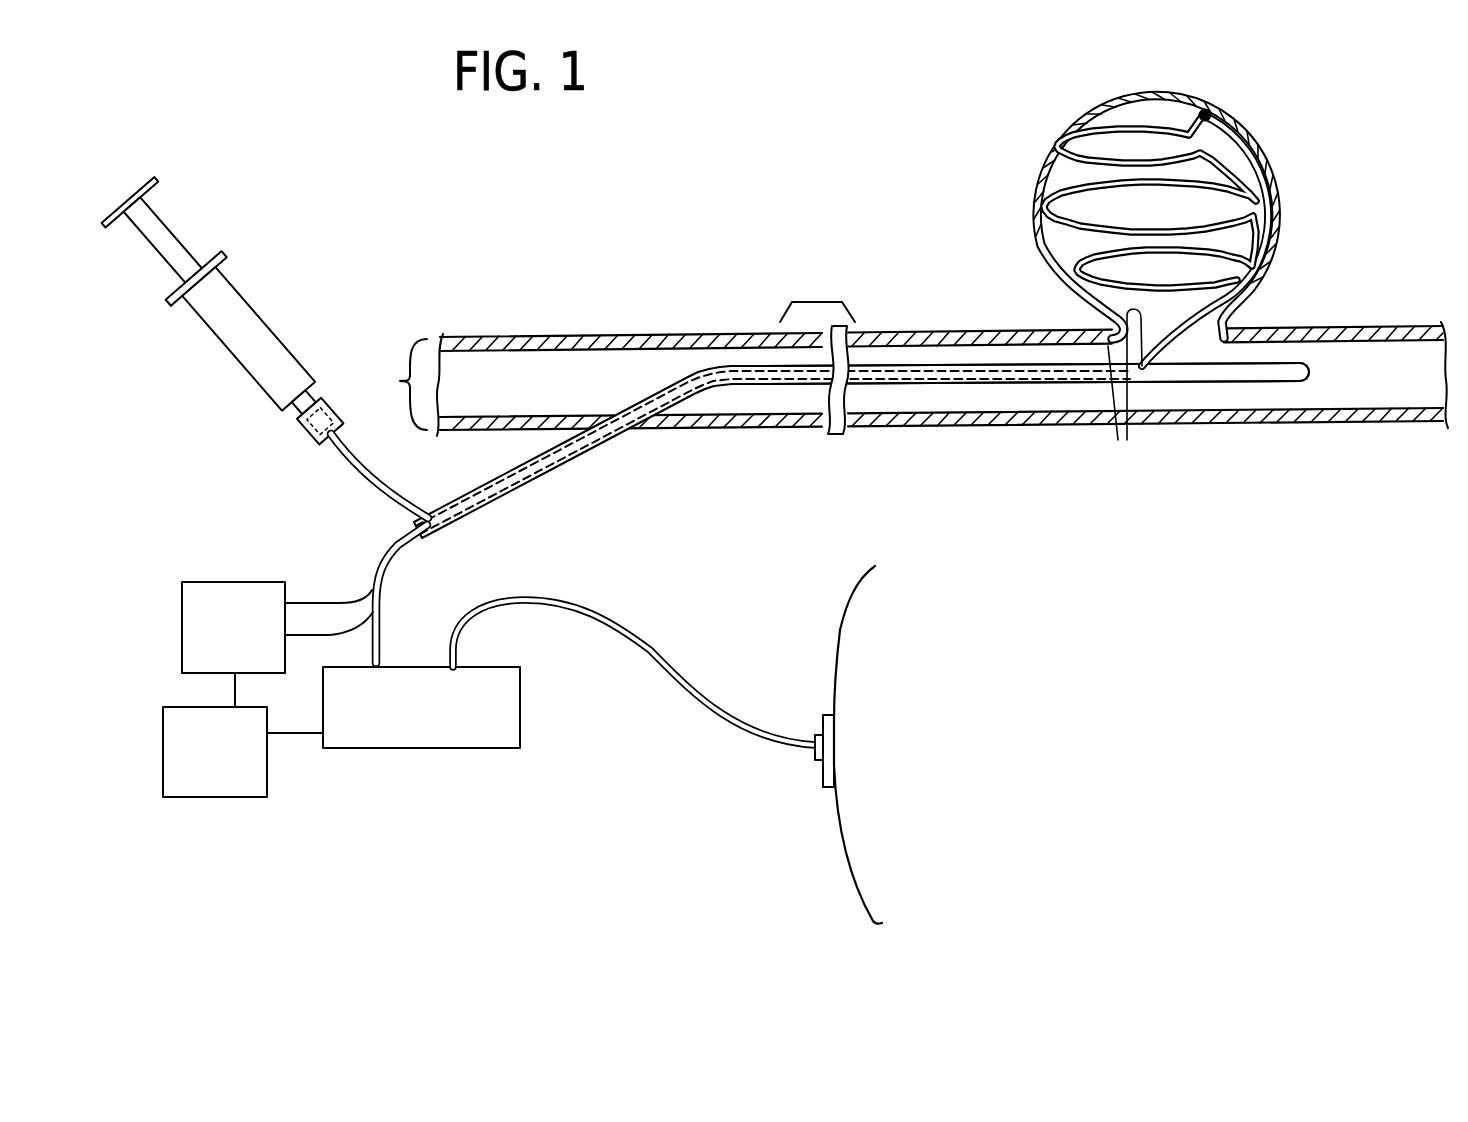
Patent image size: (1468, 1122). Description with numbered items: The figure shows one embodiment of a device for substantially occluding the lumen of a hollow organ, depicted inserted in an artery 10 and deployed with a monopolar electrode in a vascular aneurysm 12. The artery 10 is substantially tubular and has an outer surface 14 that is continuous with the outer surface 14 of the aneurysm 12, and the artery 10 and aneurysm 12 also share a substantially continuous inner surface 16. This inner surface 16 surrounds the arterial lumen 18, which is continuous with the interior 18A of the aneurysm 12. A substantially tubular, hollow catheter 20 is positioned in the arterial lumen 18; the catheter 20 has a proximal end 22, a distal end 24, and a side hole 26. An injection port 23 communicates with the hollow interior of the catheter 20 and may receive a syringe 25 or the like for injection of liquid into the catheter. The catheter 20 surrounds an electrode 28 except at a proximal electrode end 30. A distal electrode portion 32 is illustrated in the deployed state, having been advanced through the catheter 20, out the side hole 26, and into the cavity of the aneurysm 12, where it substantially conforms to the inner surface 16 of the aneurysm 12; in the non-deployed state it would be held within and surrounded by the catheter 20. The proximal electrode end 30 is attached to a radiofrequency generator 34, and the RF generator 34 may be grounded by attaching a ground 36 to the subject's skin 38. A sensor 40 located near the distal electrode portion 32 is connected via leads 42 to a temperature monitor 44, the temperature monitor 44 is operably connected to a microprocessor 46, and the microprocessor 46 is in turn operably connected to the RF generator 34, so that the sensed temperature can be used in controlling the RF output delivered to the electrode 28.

The artery 10 is at (606, 368).
The vascular aneurysm 12 is at (1210, 170).
The outer surface 14 is at (1057, 273).
The inner surface 16 is at (1123, 394).
The arterial lumen 18 is at (1414, 393).
The interior of aneurysm 18A is at (1215, 237).
The catheter 20 is at (748, 367).
The proximal end 22 is at (470, 517).
The injection port 23 is at (333, 418).
The distal end 24 is at (1233, 375).
The syringe 25 is at (240, 366).
The side hole 26 is at (1150, 367).
The electrode 28 is at (520, 500).
The proximal electrode end 30 is at (383, 640).
The distal electrode portion 32 is at (1043, 245).
The radiofrequency generator 34 is at (521, 710).
The ground 36 is at (815, 757).
The subject's skin 38 is at (838, 632).
The sensor 40 is at (1208, 113).
The leads 42 is at (333, 635).
The temperature monitor 44 is at (233, 583).
The microprocessor 46 is at (268, 772).